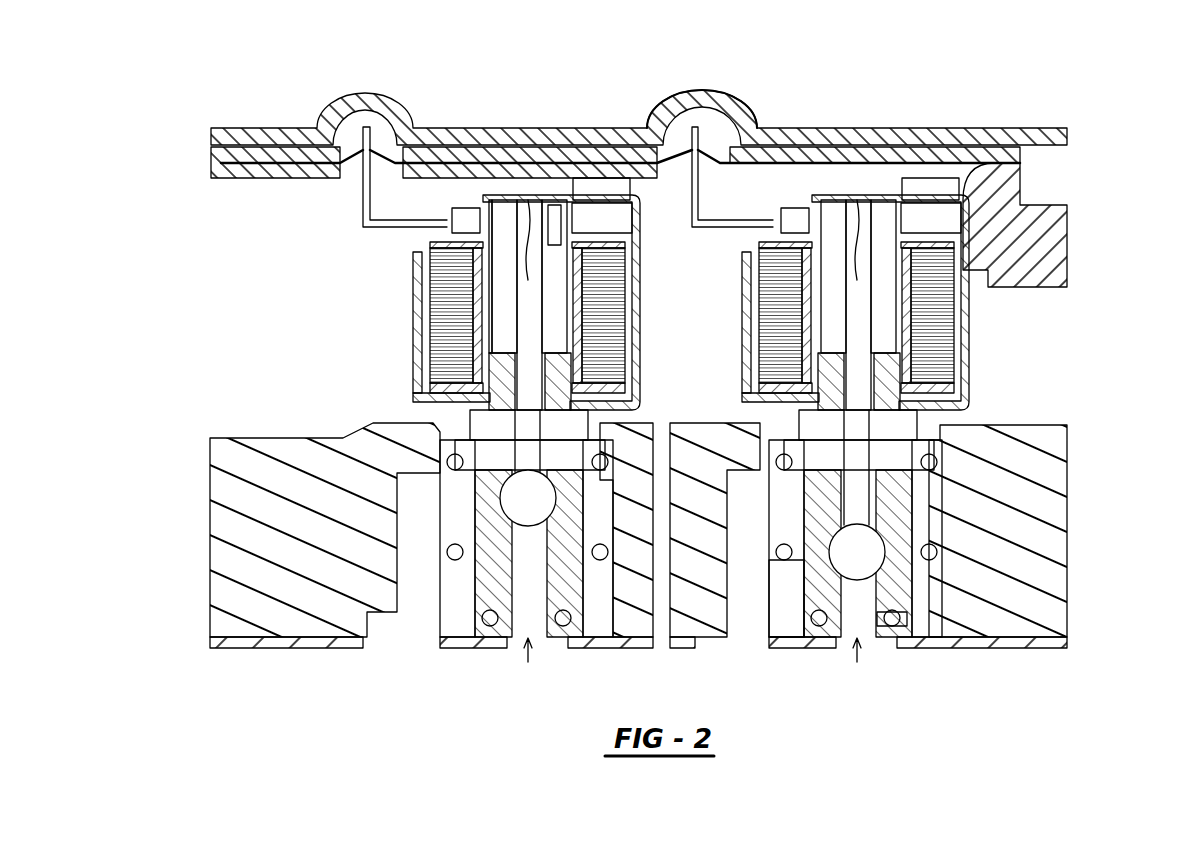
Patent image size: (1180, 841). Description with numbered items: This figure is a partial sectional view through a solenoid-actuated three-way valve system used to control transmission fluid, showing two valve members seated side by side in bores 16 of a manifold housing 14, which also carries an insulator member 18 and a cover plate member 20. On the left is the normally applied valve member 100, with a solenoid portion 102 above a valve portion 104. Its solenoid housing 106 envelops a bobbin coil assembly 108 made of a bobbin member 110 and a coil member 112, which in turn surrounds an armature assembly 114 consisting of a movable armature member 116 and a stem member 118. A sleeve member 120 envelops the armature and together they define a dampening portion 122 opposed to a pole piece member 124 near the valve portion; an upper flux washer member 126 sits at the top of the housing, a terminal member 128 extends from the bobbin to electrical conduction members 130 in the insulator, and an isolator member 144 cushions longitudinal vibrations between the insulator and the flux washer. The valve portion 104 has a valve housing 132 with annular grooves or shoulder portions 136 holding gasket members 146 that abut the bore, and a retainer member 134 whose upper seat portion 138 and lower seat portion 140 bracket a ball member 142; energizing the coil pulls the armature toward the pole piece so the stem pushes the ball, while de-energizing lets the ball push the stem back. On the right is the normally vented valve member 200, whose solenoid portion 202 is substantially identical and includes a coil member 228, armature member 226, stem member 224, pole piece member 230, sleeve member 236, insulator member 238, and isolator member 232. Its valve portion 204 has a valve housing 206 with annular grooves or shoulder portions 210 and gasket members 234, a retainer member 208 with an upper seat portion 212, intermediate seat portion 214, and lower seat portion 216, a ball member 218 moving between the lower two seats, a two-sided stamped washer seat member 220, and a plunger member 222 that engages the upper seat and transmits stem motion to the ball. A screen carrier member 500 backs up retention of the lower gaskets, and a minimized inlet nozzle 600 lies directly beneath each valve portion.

The manifold housing 14 is at (210, 470).
The bore 16 is at (450, 432).
The insulator member 18 is at (648, 178).
The cover plate member 20 is at (758, 128).
The normally applied valve member 100 is at (478, 370).
The solenoid portion 102 is at (642, 300).
The valve portion 104 is at (455, 594).
The solenoid housing 106 is at (413, 282).
The bobbin coil assembly 108 is at (625, 340).
The bobbin member 110 is at (430, 398).
The coil member 112 is at (436, 345).
The armature assembly 114 is at (507, 195).
The armature member 116 is at (608, 215).
The stem member 118 is at (553, 200).
The sleeve member 120 is at (492, 200).
The dampening portion 122 is at (528, 235).
The pole piece member 124 is at (598, 430).
The upper flux washer member 126 is at (688, 128).
The terminal member 128 is at (362, 200).
The electrical conduction member 130 is at (353, 163).
The valve housing 132 is at (445, 580).
The retainer member 134 is at (570, 600).
The annular grooves or shoulder portions 136 is at (455, 600).
The upper seat portion 138 is at (467, 497).
The lower seat portion 140 is at (467, 563).
The ball member 142 is at (533, 503).
The isolator member 144 is at (455, 193).
The gasket member 146 is at (553, 622).
The normally vented valve member 200 is at (894, 379).
The solenoid portion 202 is at (824, 302).
The valve portion 204 is at (832, 580).
The valve housing 206 is at (750, 627).
The retainer member 208 is at (912, 647).
The annular grooves or shoulder portions 210 is at (745, 538).
The upper seat portion 212 is at (739, 458).
The intermediate seat portion 214 is at (743, 578).
The lower seat portion 216 is at (826, 654).
The ball member 218 is at (919, 545).
The stamped washer seat member 220 is at (958, 538).
The plunger member 222 is at (904, 422).
The stem member 224 is at (918, 376).
The armature member 226 is at (890, 154).
The coil member 228 is at (975, 315).
The pole piece member 230 is at (763, 319).
The isolator member 232 is at (840, 206).
The gasket member 234 is at (950, 604).
The sleeve member 236 is at (889, 292).
The insulator member 238 is at (1057, 235).
The screen carrier member 500 is at (1000, 650).
The inlet nozzle 600 is at (525, 650).